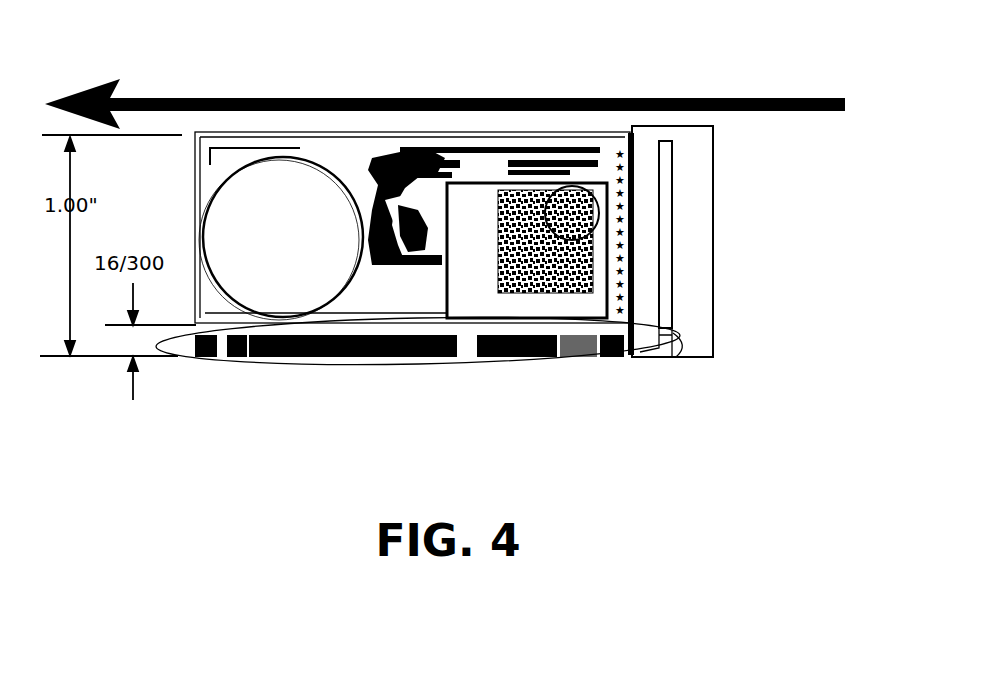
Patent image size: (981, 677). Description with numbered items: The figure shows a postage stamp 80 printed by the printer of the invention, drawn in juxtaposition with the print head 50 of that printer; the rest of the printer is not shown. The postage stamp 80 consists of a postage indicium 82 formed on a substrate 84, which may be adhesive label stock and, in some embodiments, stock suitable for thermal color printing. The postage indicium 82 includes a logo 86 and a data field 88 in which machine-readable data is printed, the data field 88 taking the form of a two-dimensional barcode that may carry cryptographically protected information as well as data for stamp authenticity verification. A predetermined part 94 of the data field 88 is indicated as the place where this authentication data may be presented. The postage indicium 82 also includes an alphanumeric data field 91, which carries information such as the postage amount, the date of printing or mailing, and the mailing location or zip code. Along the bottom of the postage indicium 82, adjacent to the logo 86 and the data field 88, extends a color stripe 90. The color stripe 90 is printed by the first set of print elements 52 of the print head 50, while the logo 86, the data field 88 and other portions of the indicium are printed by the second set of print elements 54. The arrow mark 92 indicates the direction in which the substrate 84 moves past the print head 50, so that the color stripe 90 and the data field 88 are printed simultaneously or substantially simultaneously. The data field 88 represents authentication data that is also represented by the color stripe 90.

The print head 50 is at (716, 305).
The print elements 52 is at (677, 357).
The print elements 54 is at (668, 193).
The postage stamp 80 is at (175, 212).
The postage indicium 82 is at (492, 147).
The substrate 84 is at (563, 133).
The logo 86 is at (408, 147).
The data field 88 is at (640, 235).
The color stripe 90 is at (318, 372).
The alphanumeric data field 91 is at (287, 167).
The arrow mark 92 is at (743, 97).
The predetermined part 94 is at (592, 188).